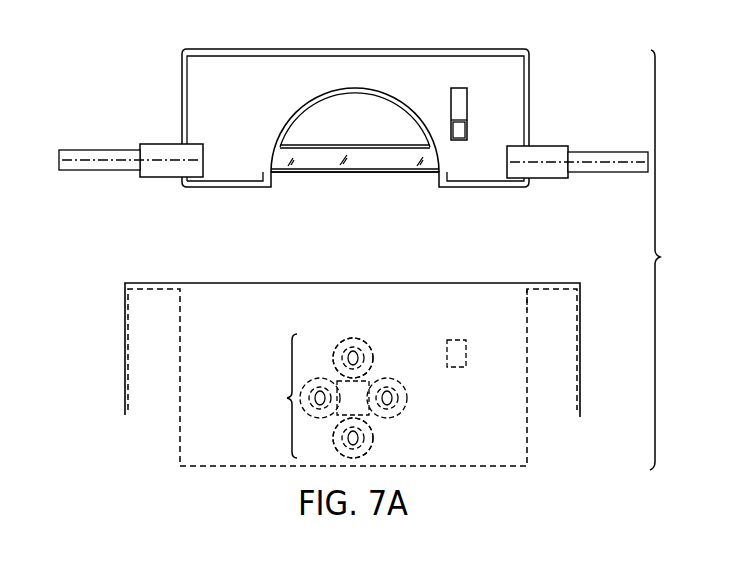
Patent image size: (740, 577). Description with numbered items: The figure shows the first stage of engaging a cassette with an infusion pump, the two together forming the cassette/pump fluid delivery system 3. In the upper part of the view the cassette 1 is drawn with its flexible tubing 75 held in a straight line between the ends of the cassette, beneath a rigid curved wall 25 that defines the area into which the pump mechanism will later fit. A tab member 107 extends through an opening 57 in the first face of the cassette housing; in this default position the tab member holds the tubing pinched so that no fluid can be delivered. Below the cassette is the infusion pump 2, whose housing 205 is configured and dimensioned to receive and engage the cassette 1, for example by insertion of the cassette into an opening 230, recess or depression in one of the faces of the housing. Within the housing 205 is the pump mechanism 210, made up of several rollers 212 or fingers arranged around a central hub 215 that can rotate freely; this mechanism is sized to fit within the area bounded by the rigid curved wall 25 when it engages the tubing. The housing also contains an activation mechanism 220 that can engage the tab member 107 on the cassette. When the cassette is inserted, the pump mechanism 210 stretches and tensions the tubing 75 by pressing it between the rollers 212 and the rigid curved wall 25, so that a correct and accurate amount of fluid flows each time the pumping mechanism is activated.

The cassette 1 is at (162, 100).
The infusion pump 2 is at (112, 320).
The cassette/pump fluid delivery system 3 is at (663, 260).
The rigid curved wall 25 is at (355, 93).
The opening 57 is at (458, 88).
The flexible tubing 75 is at (356, 169).
The tab member 107 is at (461, 131).
The housing 205 is at (151, 283).
The pump mechanism 210 is at (330, 396).
The rollers 212 is at (374, 352).
The central hub 215 is at (364, 411).
The activation mechanism 220 is at (455, 340).
The opening 230 is at (523, 315).